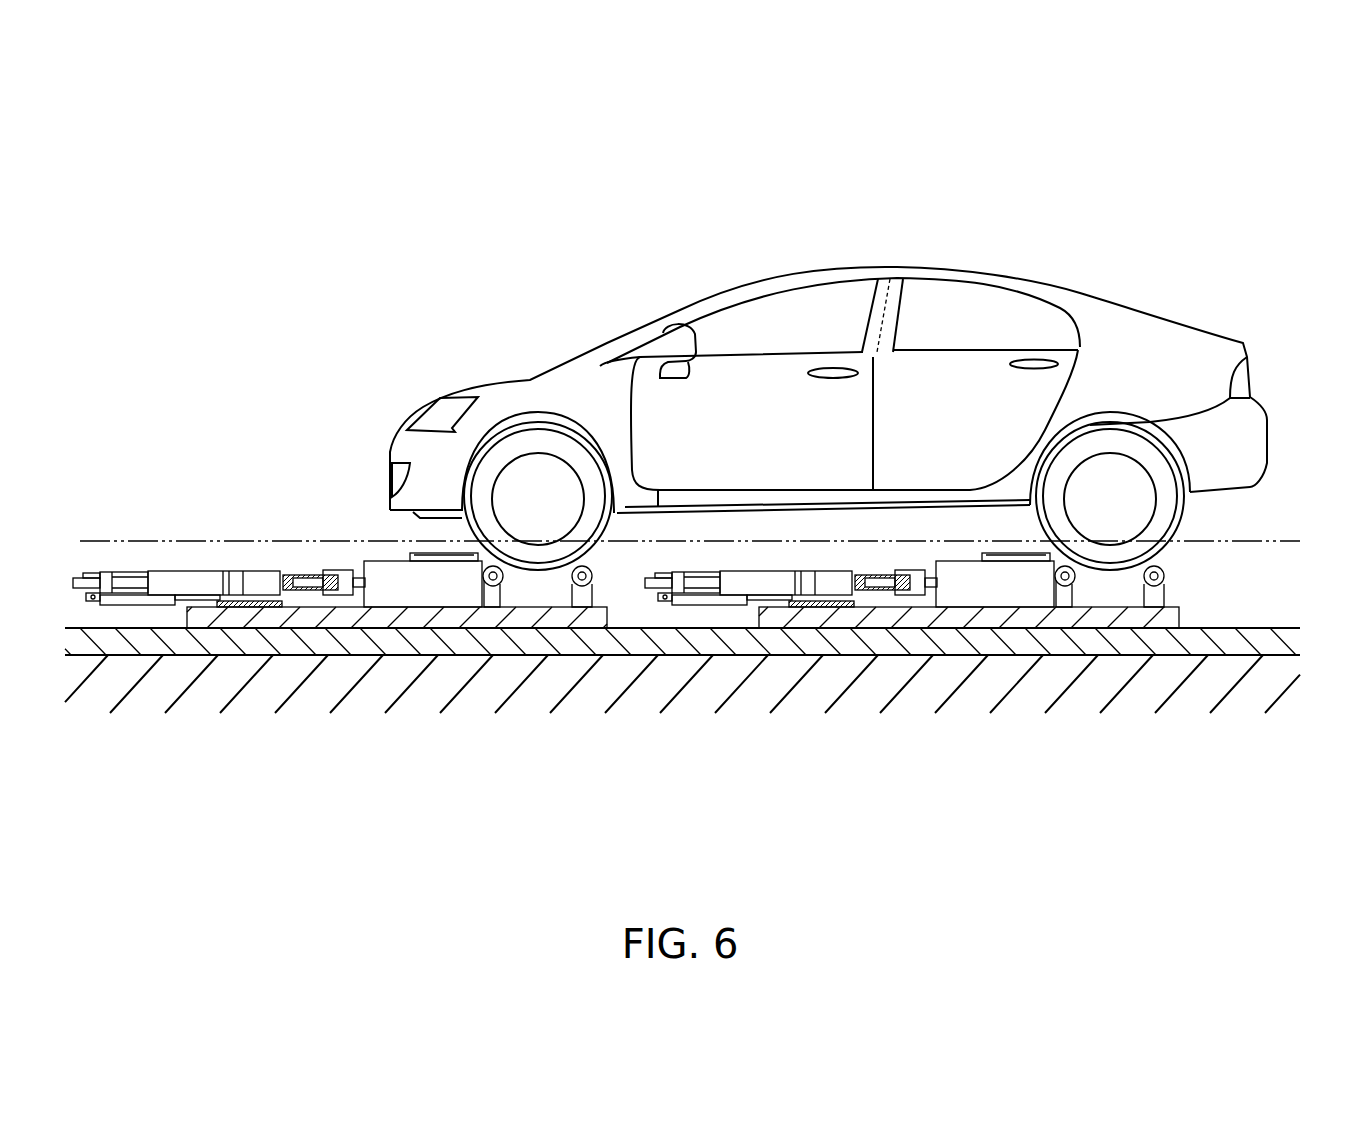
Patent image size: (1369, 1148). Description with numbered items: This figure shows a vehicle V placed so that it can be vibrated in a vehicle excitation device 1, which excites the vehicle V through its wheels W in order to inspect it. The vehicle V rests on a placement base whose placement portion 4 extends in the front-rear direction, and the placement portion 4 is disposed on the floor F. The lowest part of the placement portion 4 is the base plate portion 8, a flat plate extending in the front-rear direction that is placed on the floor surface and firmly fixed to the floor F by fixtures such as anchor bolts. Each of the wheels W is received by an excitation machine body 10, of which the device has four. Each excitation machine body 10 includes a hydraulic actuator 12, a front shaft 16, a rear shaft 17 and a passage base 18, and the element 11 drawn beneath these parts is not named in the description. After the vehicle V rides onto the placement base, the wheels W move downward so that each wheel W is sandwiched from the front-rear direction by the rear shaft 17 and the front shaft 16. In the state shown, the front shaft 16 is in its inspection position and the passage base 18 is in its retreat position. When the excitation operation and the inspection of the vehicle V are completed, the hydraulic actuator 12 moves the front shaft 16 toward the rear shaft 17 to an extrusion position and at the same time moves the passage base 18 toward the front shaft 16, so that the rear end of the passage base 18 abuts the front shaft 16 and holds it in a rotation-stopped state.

The vehicle excitation device 1 is at (955, 125).
The placement portion 4 is at (233, 541).
The base plate portion 8 is at (80, 628).
The excitation machine body 10 is at (308, 477).
The base plate 11 is at (608, 618).
The hydraulic actuator 12 is at (178, 554).
The front shaft 16 is at (493, 588).
The rear shaft 17 is at (596, 575).
The passage base 18 is at (368, 560).
The floor F is at (1292, 697).
The vehicle V is at (967, 268).
The wheel W is at (535, 436).